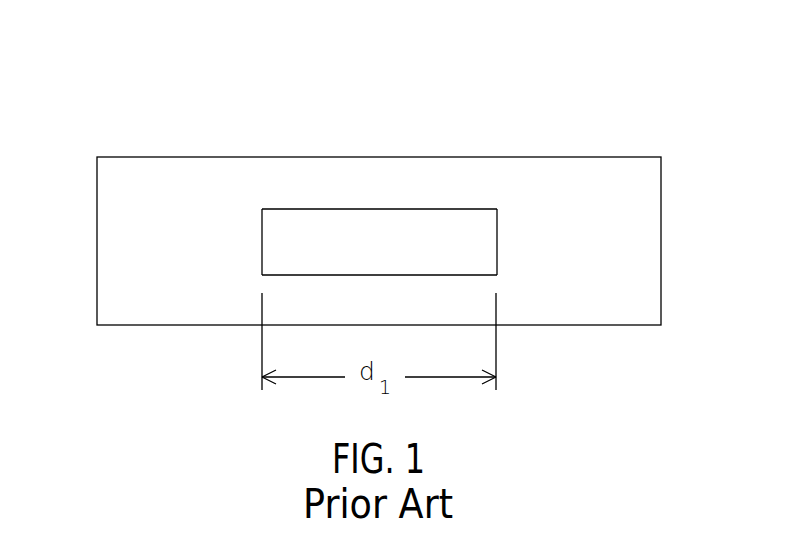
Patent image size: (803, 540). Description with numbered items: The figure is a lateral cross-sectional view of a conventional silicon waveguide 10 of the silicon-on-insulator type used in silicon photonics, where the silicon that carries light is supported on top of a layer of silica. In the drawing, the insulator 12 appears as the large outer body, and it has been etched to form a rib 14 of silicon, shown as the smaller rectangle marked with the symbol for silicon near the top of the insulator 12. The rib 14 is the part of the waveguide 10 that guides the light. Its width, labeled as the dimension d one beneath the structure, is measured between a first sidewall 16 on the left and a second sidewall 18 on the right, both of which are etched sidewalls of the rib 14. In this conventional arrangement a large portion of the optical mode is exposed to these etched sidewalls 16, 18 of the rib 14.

The silicon waveguide 10 is at (463, 119).
The insulator 12 is at (605, 284).
The rib 14 is at (297, 216).
The first sidewall 16 is at (262, 232).
The second sidewall 18 is at (497, 227).